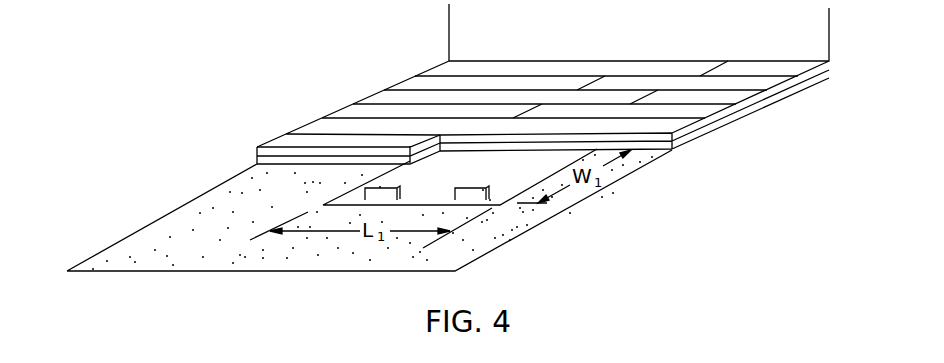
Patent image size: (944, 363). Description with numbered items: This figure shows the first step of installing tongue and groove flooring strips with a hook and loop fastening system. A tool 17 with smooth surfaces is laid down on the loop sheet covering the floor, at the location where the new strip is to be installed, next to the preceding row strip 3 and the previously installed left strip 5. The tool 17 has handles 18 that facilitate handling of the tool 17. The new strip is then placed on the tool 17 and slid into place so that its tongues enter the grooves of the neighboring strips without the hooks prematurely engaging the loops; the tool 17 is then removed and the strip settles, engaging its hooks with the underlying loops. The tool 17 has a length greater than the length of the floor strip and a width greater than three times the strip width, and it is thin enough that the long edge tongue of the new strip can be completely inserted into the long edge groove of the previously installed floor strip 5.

The preceding row strip 3 is at (502, 110).
The left strip 5 is at (312, 142).
The tool 17 is at (338, 195).
The handles 18 is at (486, 188).